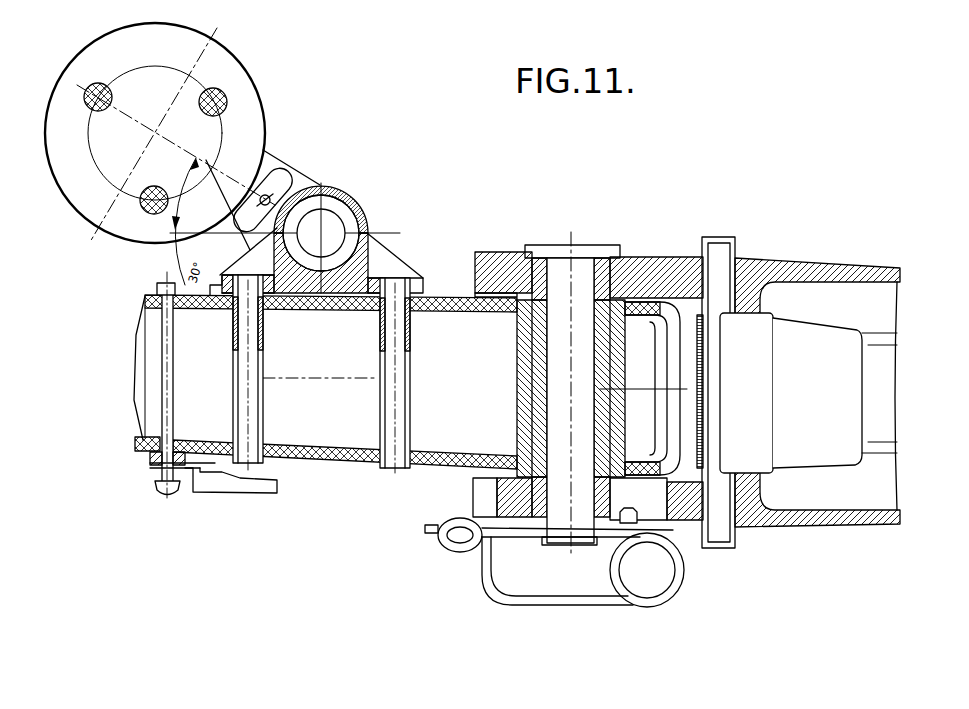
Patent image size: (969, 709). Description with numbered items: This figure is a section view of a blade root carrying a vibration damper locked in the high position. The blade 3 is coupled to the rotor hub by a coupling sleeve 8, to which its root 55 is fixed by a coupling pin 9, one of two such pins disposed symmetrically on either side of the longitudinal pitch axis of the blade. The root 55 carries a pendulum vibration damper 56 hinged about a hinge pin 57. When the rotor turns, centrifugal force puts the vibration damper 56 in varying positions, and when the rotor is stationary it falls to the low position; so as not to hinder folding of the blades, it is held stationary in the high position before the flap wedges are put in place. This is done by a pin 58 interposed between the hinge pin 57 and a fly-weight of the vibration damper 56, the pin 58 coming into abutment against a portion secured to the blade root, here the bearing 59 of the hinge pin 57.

The blade 3 is at (312, 455).
The coupling sleeve 8 is at (818, 520).
The coupling pin 9 is at (580, 270).
The blade root 55 is at (433, 468).
The pendulum vibration damper 56 is at (133, 225).
The hinge pin 57 is at (353, 208).
The pin 58 is at (247, 222).
The bearing 59 is at (393, 265).